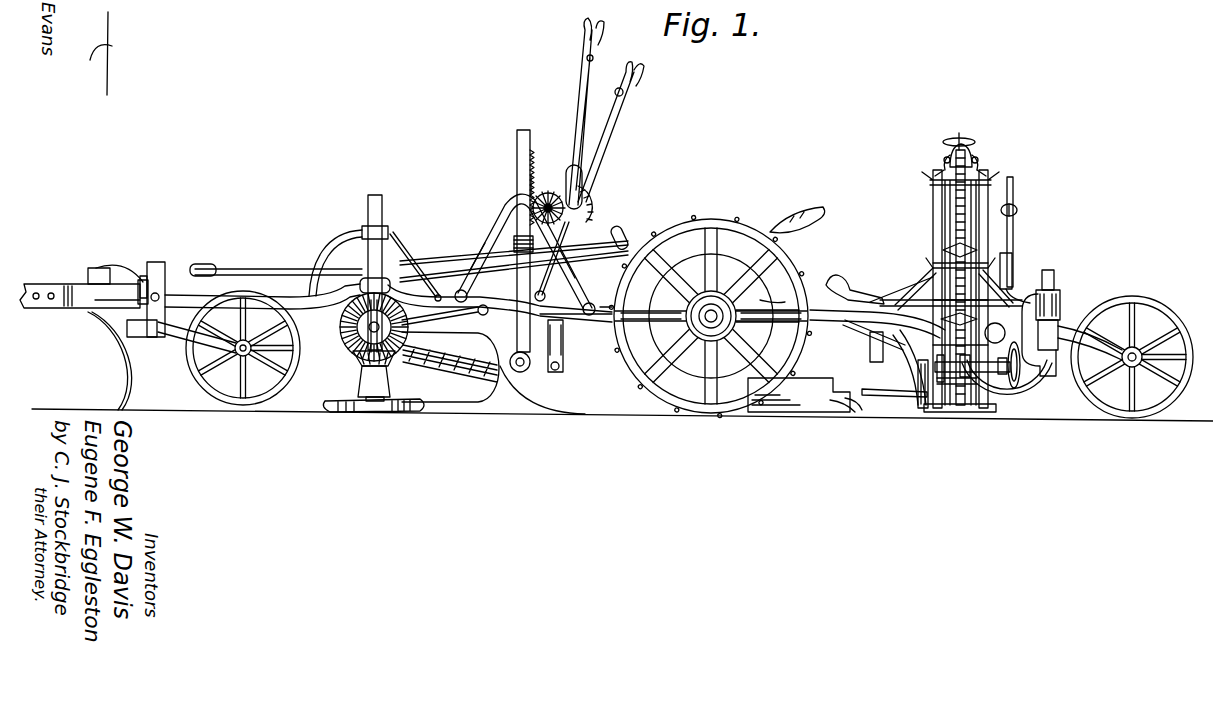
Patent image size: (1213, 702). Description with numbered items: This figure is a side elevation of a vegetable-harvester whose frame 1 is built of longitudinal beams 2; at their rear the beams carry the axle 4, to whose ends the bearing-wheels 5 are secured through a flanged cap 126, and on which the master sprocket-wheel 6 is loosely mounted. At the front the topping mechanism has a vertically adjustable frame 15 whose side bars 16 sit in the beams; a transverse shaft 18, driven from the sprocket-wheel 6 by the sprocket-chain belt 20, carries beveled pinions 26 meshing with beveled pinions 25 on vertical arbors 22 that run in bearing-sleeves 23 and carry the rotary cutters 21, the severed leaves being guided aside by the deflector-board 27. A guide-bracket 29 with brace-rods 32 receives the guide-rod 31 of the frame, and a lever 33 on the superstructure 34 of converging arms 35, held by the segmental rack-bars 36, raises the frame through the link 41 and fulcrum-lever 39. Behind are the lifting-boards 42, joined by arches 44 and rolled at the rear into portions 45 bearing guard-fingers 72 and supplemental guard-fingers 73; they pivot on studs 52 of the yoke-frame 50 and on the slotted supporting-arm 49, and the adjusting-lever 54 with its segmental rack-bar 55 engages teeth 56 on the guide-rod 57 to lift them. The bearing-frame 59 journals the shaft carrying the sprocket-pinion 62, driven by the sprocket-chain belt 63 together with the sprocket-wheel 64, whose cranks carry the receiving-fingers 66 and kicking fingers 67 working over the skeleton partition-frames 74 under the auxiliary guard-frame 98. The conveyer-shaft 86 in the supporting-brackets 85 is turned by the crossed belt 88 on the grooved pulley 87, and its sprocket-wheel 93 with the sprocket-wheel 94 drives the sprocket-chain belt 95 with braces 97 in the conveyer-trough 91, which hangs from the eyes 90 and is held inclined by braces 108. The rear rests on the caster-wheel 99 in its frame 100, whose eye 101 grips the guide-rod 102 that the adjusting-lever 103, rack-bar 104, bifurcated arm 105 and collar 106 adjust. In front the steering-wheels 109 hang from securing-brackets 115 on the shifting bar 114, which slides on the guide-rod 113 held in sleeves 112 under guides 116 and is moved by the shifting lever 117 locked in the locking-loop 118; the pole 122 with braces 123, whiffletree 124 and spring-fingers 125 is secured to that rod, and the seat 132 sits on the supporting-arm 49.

The frame 1 is at (573, 337).
The longitudinal beams 2 is at (607, 308).
The axle 4 is at (717, 313).
The bearing-wheels 5 is at (725, 222).
The master sprocket-wheel 6 is at (772, 304).
The frame 15 is at (372, 340).
The side bars 16 is at (368, 280).
The shaft 18 is at (341, 322).
The sprocket-chain belt 20 is at (497, 278).
The rotary cutters 21 is at (376, 406).
The arbors 22 is at (366, 401).
The bearing-sleeves 23 is at (362, 384).
The beveled pinions 25 is at (360, 362).
The beveled pinions 26 is at (360, 333).
The deflector-board 27 is at (450, 367).
The guide-bracket 29 is at (319, 252).
The guide-rod 31 is at (383, 203).
The brace-rods 32 is at (406, 258).
The lever 33 is at (600, 148).
The superstructure 34 is at (506, 208).
The arms 35 is at (488, 233).
The segmental rack-bars 36 is at (588, 207).
The fulcrum-lever 39 is at (488, 315).
The link 41 is at (549, 266).
The lifting-boards 42 is at (598, 400).
The arches 44 is at (562, 368).
The rolled portions 45 is at (808, 406).
The slotted supporting-arm 49 is at (831, 320).
The yoke-frame 50 is at (514, 247).
The studs 52 is at (520, 369).
The adjusting-lever 54 is at (583, 120).
The segmental rack-bar 55 is at (549, 200).
The teeth 56 is at (536, 182).
The guide-rod 57 is at (516, 140).
The bearing-frame 59 is at (999, 324).
The sprocket-pinion 62 is at (897, 352).
The sprocket-chain belt 63 is at (866, 333).
The sprocket-wheel 64 is at (1030, 390).
The receiving-fingers 66 is at (845, 294).
The kicking fingers 67 is at (875, 398).
The guard-fingers 72 is at (836, 410).
The supplemental guard-fingers 73 is at (860, 406).
The skeleton partition-frames 74 is at (870, 352).
The supporting-brackets 85 is at (943, 382).
The conveyer-shaft 86 is at (968, 378).
The grooved pulley 87 is at (1005, 376).
The crossed belt 88 is at (1013, 342).
The eyes 90 is at (923, 406).
The conveyer-trough 91 is at (933, 204).
The sprocket-wheel 93 is at (958, 374).
The sprocket-wheel 94 is at (974, 160).
The sprocket-chain belt 95 is at (966, 204).
The braces 97 is at (962, 138).
The auxiliary guard-frame 98 is at (910, 278).
The caster-wheel 99 is at (1162, 318).
The frame 100 is at (1106, 298).
The eye 101 is at (1048, 376).
The guide-rod 102 is at (1054, 284).
The adjusting-lever 103 is at (1013, 262).
The rack-bar 104 is at (1013, 282).
The bifurcated arm 105 is at (1060, 322).
The collar 106 is at (1060, 297).
The braces 108 is at (910, 295).
The steering-wheels 109 is at (197, 376).
The sleeves 112 is at (168, 290).
The guide-rod 113 is at (145, 302).
The shifting bar 114 is at (145, 273).
The securing-brackets 115 is at (157, 337).
The guides 116 is at (160, 262).
The shifting lever 117 is at (262, 269).
The locking-loop 118 is at (622, 232).
The pole 122 is at (28, 286).
The braces 123 is at (88, 296).
The whiffletree 124 is at (100, 266).
The spring-fingers 125 is at (128, 390).
The flanged cap 126 is at (703, 306).
The seat 132 is at (781, 220).